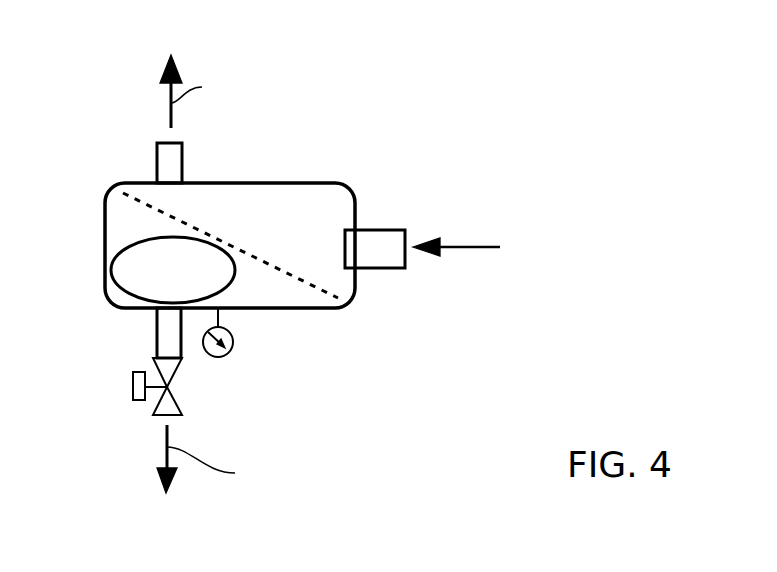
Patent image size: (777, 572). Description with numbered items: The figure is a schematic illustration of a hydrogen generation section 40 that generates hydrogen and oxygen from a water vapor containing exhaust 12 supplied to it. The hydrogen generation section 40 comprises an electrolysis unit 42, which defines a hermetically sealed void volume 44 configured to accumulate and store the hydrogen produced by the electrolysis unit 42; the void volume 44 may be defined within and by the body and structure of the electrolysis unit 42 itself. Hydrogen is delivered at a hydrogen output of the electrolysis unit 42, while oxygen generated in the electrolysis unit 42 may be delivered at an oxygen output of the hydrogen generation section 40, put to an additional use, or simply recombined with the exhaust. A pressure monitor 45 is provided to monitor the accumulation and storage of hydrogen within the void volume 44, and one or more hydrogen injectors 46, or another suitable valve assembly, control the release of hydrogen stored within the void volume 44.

The hydrogen generation section 40 is at (396, 85).
The electrolysis unit 42 is at (293, 183).
The void volume 44 is at (143, 237).
The pressure monitor 45 is at (235, 343).
The hydrogen injector 46 is at (133, 376).
The water vapor containing exhaust 12 is at (478, 247).